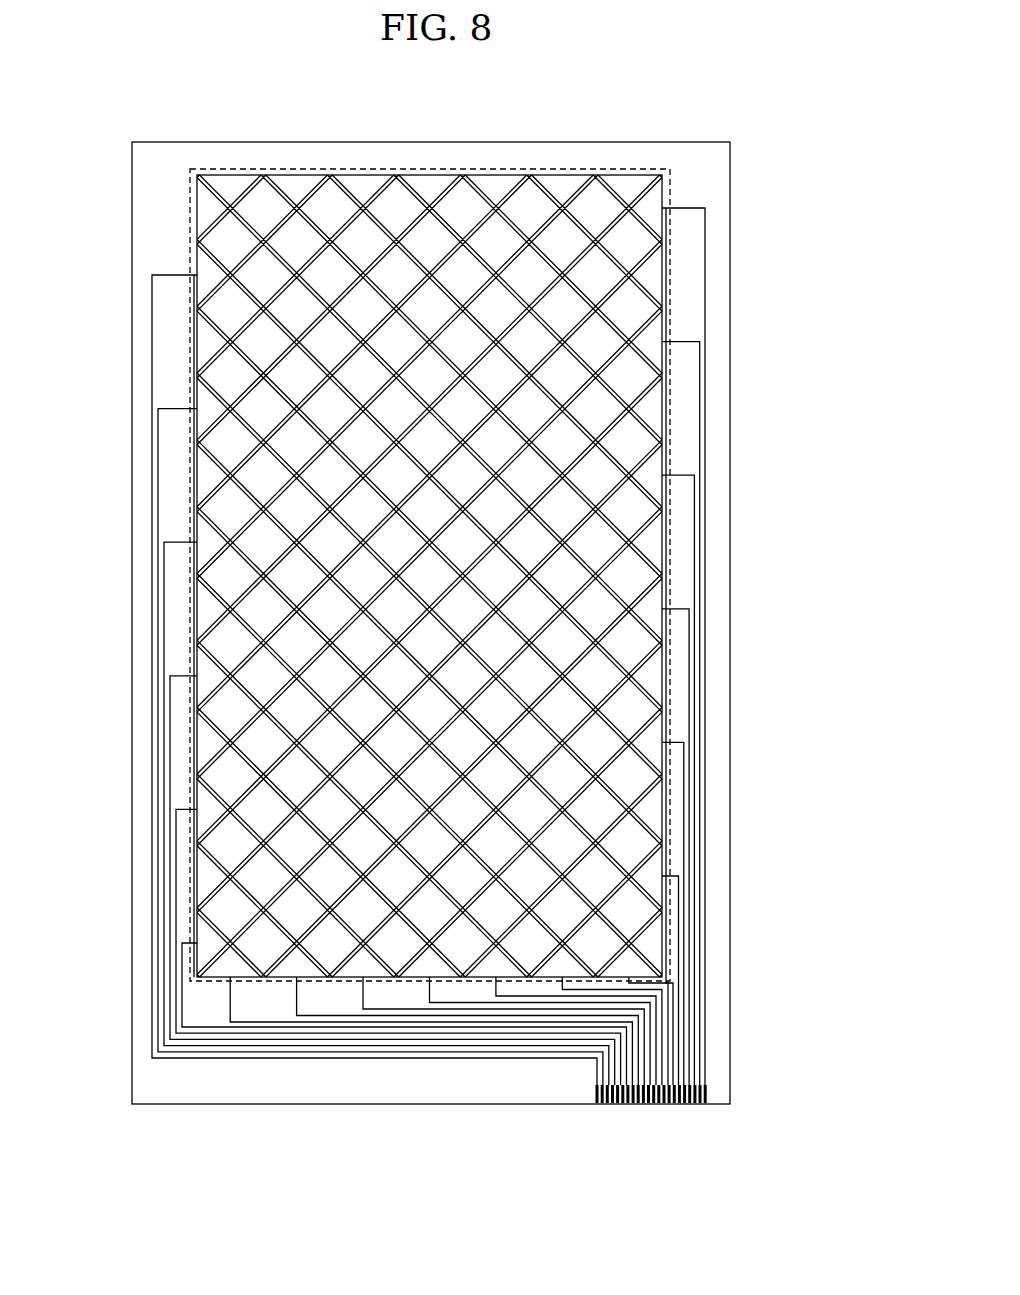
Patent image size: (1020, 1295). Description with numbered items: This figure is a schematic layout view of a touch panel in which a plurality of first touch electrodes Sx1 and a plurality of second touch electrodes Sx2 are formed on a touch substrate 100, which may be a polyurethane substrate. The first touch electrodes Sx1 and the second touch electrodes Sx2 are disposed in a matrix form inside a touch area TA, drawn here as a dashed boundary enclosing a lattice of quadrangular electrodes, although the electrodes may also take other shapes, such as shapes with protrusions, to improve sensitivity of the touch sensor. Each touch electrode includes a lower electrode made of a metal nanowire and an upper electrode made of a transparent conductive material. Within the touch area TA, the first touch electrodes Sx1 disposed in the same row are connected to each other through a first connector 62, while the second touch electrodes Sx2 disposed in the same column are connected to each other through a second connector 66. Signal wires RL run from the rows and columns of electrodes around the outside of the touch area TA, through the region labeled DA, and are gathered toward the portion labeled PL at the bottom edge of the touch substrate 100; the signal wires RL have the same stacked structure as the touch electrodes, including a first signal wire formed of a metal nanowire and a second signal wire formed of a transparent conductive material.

The touch substrate 100 is at (582, 143).
The touch area TA is at (640, 170).
The dead area DA is at (150, 182).
The second connector 66 is at (358, 206).
The first connector 62 is at (432, 195).
The first touch electrode Sx1 is at (472, 206).
The second touch electrode Sx2 is at (372, 237).
The signal wire RL is at (705, 262).
The pad portion PL is at (600, 1095).